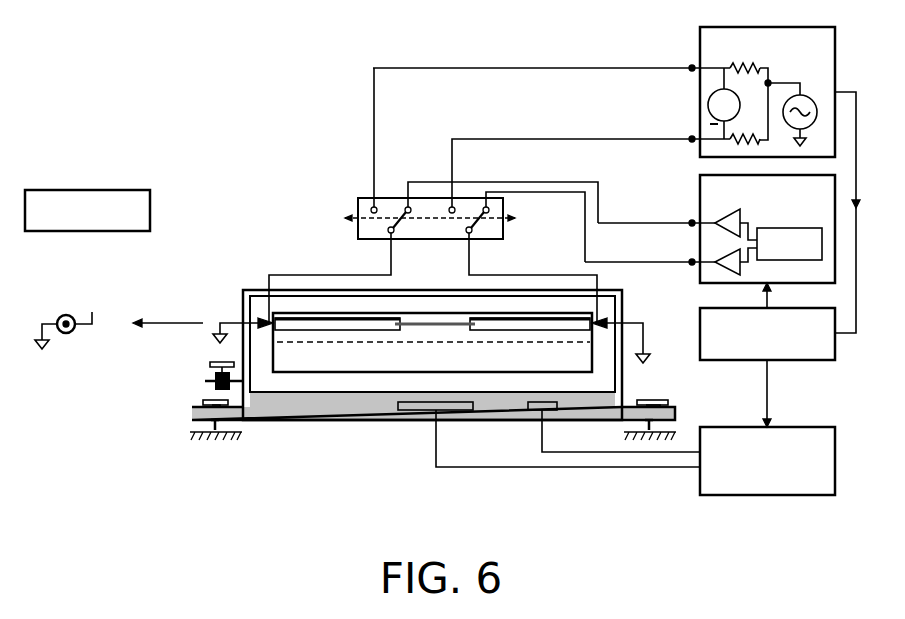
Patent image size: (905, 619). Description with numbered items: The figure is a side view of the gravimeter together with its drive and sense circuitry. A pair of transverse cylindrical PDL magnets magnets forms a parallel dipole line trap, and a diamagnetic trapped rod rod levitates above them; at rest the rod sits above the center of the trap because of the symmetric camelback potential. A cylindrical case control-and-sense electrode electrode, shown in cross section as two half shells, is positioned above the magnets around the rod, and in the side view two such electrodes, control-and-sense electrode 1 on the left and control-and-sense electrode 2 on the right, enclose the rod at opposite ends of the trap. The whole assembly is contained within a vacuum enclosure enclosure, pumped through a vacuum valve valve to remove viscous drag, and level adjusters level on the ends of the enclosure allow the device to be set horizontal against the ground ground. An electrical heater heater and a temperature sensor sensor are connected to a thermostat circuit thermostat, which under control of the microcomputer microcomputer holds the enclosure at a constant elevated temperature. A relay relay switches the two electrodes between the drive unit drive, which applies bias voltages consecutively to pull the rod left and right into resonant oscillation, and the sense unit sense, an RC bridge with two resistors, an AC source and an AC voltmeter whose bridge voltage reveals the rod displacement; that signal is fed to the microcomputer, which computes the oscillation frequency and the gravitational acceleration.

The control-and-sense electrode 1 is at (312, 322).
The control-and-sense electrode 2 is at (550, 324).
The Sense unit sense is at (616, 180).
The Drive unit drive is at (710, 229).
The element microcomputer is at (767, 355).
The thermostat circuit thermostat is at (767, 461).
The element relay is at (362, 198).
The vacuum enclosure is at (297, 412).
The PDL magnets is at (339, 372).
The trapped rod is at (455, 330).
The vacuum valve is at (208, 377).
The level adjuster level is at (200, 403).
The element ground is at (429, 446).
The electrical heater is at (458, 412).
The temperature sensor is at (552, 412).
The control-and-sense electrode is at (60, 311).